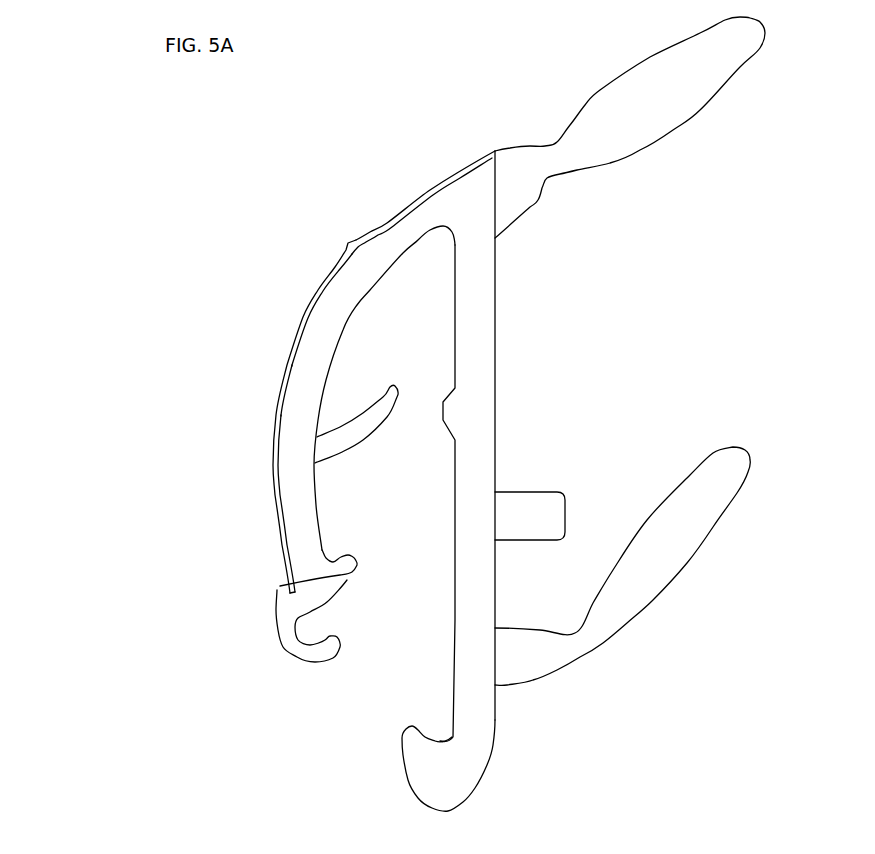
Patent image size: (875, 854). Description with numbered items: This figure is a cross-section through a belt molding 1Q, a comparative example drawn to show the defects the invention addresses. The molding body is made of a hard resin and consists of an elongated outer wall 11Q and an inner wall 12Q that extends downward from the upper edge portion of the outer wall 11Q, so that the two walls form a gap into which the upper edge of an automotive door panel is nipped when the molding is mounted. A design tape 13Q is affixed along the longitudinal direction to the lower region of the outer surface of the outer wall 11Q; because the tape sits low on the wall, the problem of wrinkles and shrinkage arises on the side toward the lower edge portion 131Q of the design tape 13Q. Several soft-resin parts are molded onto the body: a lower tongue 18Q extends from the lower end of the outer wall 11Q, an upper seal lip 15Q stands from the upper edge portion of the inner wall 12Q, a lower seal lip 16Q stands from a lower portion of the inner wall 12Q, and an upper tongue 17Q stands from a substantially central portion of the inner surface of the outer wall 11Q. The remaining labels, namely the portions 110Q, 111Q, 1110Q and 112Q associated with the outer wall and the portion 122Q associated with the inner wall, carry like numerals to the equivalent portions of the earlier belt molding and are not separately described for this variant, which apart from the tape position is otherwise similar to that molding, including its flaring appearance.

The belt molding 1Q is at (333, 240).
The outer wall 11Q is at (307, 357).
The inner wall 12Q is at (489, 326).
The design tape 13Q is at (313, 313).
The upper seal lip 15Q is at (738, 58).
The lower seal lip 16Q is at (728, 493).
The upper tongue 17Q is at (372, 422).
The lower tongue 18Q is at (305, 655).
The outer surface of arc body 110Q is at (287, 460).
The upper portion of arc body 111Q is at (432, 202).
The lower end of arc body 112Q is at (360, 570).
The bottom lobe 122Q is at (425, 733).
The lower edge portion of design tape 131Q is at (285, 590).
The outer surface of upper portion 1110Q is at (393, 207).